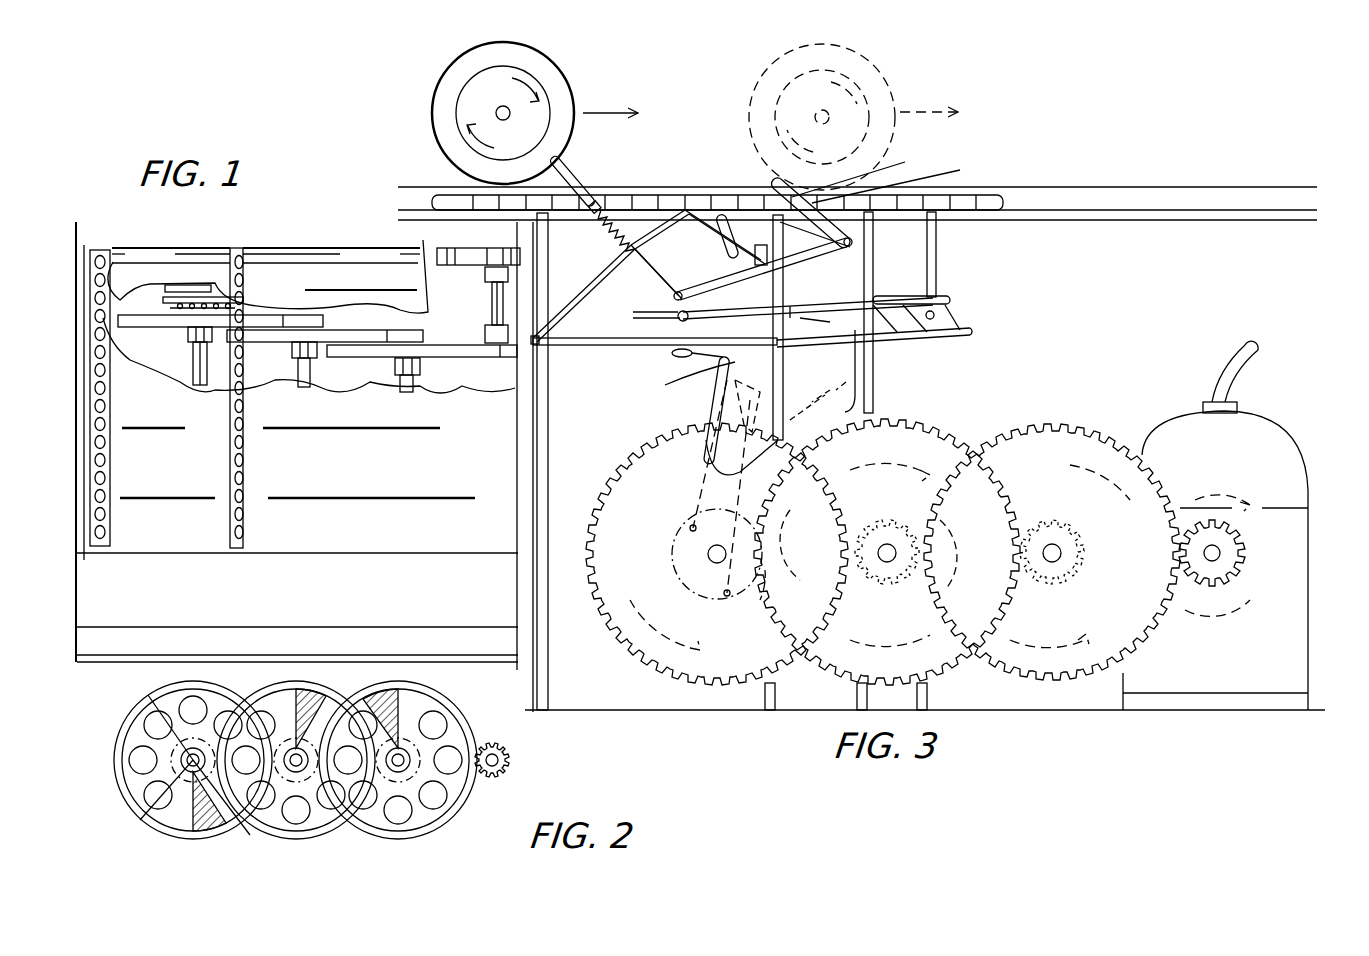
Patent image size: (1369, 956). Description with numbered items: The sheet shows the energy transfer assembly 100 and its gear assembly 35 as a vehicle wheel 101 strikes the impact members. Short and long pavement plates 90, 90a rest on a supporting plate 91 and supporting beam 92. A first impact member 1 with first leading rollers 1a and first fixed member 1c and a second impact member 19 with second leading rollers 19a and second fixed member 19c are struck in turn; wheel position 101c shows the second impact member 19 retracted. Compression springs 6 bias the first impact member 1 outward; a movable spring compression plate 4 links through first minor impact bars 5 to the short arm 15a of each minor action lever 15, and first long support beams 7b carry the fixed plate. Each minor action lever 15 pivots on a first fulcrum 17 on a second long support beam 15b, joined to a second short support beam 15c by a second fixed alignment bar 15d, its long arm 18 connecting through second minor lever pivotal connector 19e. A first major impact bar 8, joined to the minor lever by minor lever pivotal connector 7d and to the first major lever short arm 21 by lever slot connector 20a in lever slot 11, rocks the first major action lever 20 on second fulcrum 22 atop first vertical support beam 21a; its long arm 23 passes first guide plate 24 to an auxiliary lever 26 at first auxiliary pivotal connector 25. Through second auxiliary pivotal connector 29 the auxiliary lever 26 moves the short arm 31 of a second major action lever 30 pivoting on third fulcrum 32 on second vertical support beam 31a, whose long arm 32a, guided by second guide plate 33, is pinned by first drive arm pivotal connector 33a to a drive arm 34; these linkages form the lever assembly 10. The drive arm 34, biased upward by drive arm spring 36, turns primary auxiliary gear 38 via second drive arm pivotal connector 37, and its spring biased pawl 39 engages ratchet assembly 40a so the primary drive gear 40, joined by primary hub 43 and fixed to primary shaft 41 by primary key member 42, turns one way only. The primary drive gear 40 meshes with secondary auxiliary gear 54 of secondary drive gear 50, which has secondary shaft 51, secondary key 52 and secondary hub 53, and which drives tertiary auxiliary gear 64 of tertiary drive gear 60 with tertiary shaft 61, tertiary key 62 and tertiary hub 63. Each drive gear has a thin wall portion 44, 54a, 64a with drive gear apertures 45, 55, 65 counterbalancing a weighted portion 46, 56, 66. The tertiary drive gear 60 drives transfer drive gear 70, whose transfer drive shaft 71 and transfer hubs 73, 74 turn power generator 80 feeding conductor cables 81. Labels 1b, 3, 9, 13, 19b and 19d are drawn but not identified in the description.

In FIG. 1, the pusher arm / frame member 1 is at (107, 466).
In FIG. 3, the pusher arm / frame member 1 is at (560, 179).
In FIG. 1, the arm end 1a is at (102, 526).
In FIG. 3, the arm end 1a is at (551, 162).
In FIG. 1, the frame hole 1b is at (104, 488).
In FIG. 3, the arm pivot 1c is at (571, 191).
In FIG. 3, the block 3 is at (581, 221).
In FIG. 3, the spring 4 is at (593, 232).
In FIG. 3, the spring end 5 is at (600, 234).
In FIG. 3, the link 6 is at (631, 249).
In FIG. 3, the lever bar 7b is at (585, 294).
In FIG. 3, the lever end 7d is at (655, 310).
In FIG. 3, the pivot pin 8 is at (678, 314).
In FIG. 3, the link bar 9 is at (725, 237).
In FIG. 3, the drive mechanism 10 is at (1037, 288).
In FIG. 3, the pin 11 is at (670, 318).
In FIG. 3, the link bar 13 is at (656, 272).
In FIG. 3, the actuating bar 15 is at (800, 278).
In FIG. 3, the bar end 15a is at (754, 275).
In FIG. 3, the pin 15b is at (726, 218).
In FIG. 3, the pin 15c is at (730, 218).
In FIG. 3, the link bar 15d is at (664, 230).
In FIG. 3, the connector 17 is at (768, 249).
In FIG. 3, the long bar 18 is at (803, 256).
In FIG. 1, the second arm 19 is at (243, 487).
In FIG. 3, the second arm 19 is at (790, 188).
In FIG. 1, the arm end 19a is at (243, 470).
In FIG. 3, the arm end 19a is at (782, 186).
In FIG. 1, the guide line 19b is at (243, 532).
In FIG. 3, the guide line 19b is at (865, 172).
In FIG. 3, the guide line 19c is at (896, 182).
In FIG. 3, the arm pivot 19d is at (815, 236).
In FIG. 3, the bar end 19e is at (852, 242).
In FIG. 3, the bar 20 is at (807, 300).
In FIG. 3, the bar end 20a is at (721, 315).
In FIG. 3, the bar 21 is at (763, 312).
In FIG. 3, the bar end 21a is at (784, 316).
In FIG. 3, the bracket 22 is at (828, 321).
In FIG. 3, the truss brace 23 is at (917, 298).
In FIG. 3, the post 24 is at (874, 274).
In FIG. 3, the bar 25 is at (945, 296).
In FIG. 3, the pivot 26 is at (946, 320).
In FIG. 3, the bar 29 is at (969, 334).
In FIG. 3, the link 30 is at (845, 366).
In FIG. 3, the post 31 is at (885, 344).
In FIG. 3, the post part 31a is at (873, 389).
In FIG. 3, the link 32 is at (840, 414).
In FIG. 1, the plate 32a is at (208, 286).
In FIG. 3, the plate 32a is at (854, 390).
In FIG. 3, the post 33 is at (783, 365).
In FIG. 3, the link 33a is at (665, 385).
In FIG. 1, the arm 34 is at (220, 293).
In FIG. 3, the arm 34 is at (712, 410).
In FIG. 2, the wheel assembly 35 is at (314, 882).
In FIG. 3, the wheel assembly 35 is at (986, 690).
In FIG. 3, the link 36 is at (672, 356).
In FIG. 3, the pivot 37 is at (688, 527).
In FIG. 1, the bracket 38 is at (238, 298).
In FIG. 1, the frame side 39 is at (113, 310).
In FIG. 1, the first gear wheel 40 is at (150, 330).
In FIG. 2, the first gear wheel 40 is at (115, 726).
In FIG. 3, the first gear wheel 40 is at (610, 467).
In FIG. 1, the plate 40a is at (255, 299).
In FIG. 1, the shaft 41 is at (194, 352).
In FIG. 2, the shaft 41 is at (180, 765).
In FIG. 3, the shaft 41 is at (710, 550).
In FIG. 2, the cam circle 42 is at (180, 778).
In FIG. 3, the cam circle 42 is at (702, 562).
In FIG. 1, the bearing 43 is at (190, 338).
In FIG. 2, the bearing 43 is at (154, 724).
In FIG. 2, the spoke 44 is at (172, 758).
In FIG. 2, the hole 45 is at (143, 752).
In FIG. 2, the sector 46 is at (191, 837).
In FIG. 1, the second gear wheel 50 is at (278, 342).
In FIG. 2, the second gear wheel 50 is at (275, 684).
In FIG. 3, the second gear wheel 50 is at (950, 417).
In FIG. 2, the rim 51 is at (277, 690).
In FIG. 1, the bearing 52 is at (313, 380).
In FIG. 2, the bearing 52 is at (341, 820).
In FIG. 3, the bearing 52 is at (890, 562).
In FIG. 1, the shaft 53 is at (300, 364).
In FIG. 2, the shaft 53 is at (285, 795).
In FIG. 3, the shaft 53 is at (884, 562).
In FIG. 1, the bar / pinion 54 is at (323, 322).
In FIG. 3, the bar / pinion 54 is at (895, 518).
In FIG. 2, the rim 54a is at (260, 691).
In FIG. 2, the hole 55 is at (301, 818).
In FIG. 2, the sector 56 is at (318, 697).
In FIG. 1, the third gear wheel 60 is at (383, 357).
In FIG. 3, the third gear wheel 60 is at (1052, 428).
In FIG. 1, the shaft 61 is at (413, 384).
In FIG. 2, the shaft 61 is at (432, 718).
In FIG. 2, the shaft 62 is at (410, 788).
In FIG. 3, the shaft 62 is at (1058, 562).
In FIG. 1, the bearing 63 is at (420, 366).
In FIG. 2, the bearing 63 is at (468, 776).
In FIG. 3, the bearing 63 is at (1062, 553).
In FIG. 1, the pinion 64 is at (423, 336).
In FIG. 3, the pinion 64 is at (1059, 530).
In FIG. 2, the rim 64a is at (437, 710).
In FIG. 2, the hole 65 is at (418, 785).
In FIG. 2, the sector 66 is at (398, 694).
In FIG. 1, the small gear 70 is at (510, 357).
In FIG. 2, the small gear 70 is at (510, 755).
In FIG. 3, the small gear 70 is at (1240, 548).
In FIG. 1, the shaft 71 is at (492, 300).
In FIG. 2, the shaft 71 is at (498, 762).
In FIG. 3, the shaft 71 is at (1222, 556).
In FIG. 1, the bearing 73 is at (485, 338).
In FIG. 1, the bearing 74 is at (485, 277).
In FIG. 1, the tank 80 is at (505, 248).
In FIG. 3, the tank 80 is at (1283, 446).
In FIG. 3, the tube 81 is at (1222, 363).
In FIG. 1, the conveyor 90 is at (171, 390).
In FIG. 3, the conveyor 90 is at (680, 193).
In FIG. 1, the conveyor surface 90a is at (348, 357).
In FIG. 3, the conveyor surface 90a is at (451, 192).
In FIG. 3, the conveyor chain 91 is at (445, 200).
In FIG. 1, the conveyor rail 92 is at (454, 220).
In FIG. 3, the conveyor rail 92 is at (1026, 220).
In FIG. 3, the apparatus 100 is at (1140, 102).
In FIG. 3, the roller 101 is at (556, 90).
In FIG. 3, the roller (phantom) 101c is at (878, 84).